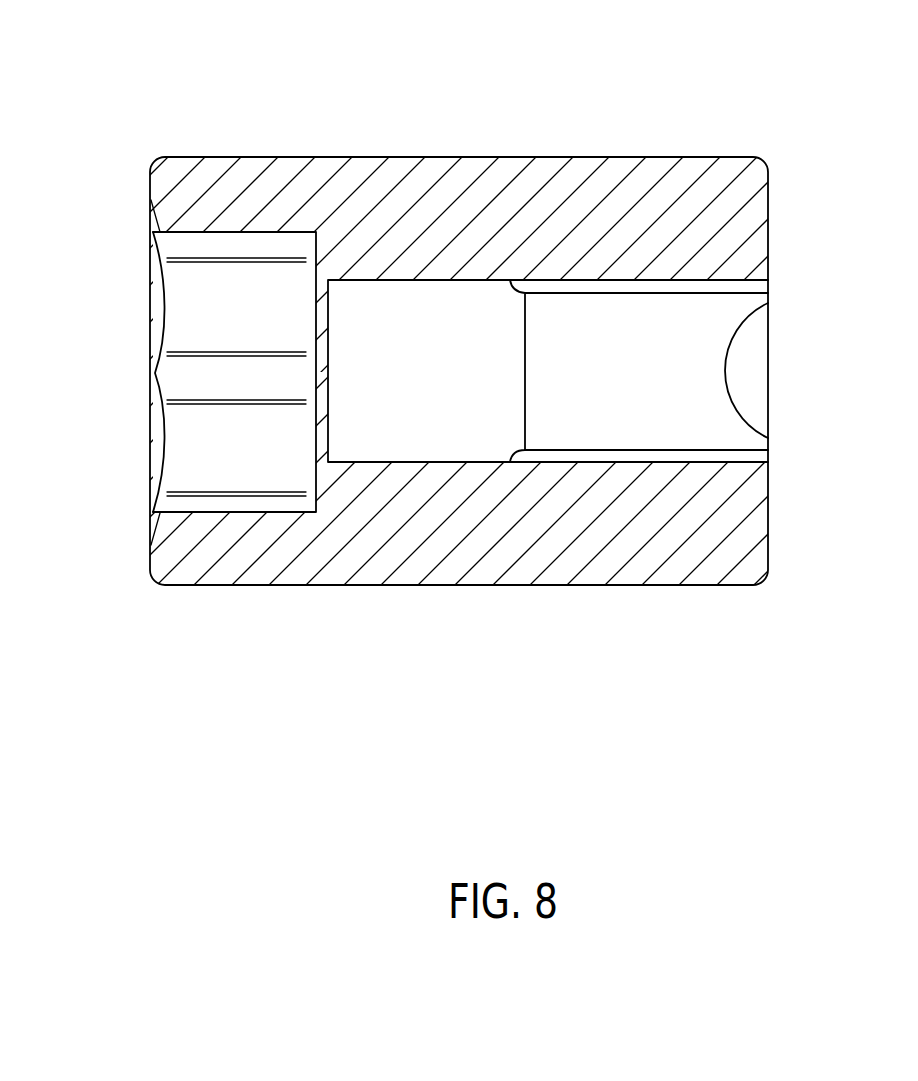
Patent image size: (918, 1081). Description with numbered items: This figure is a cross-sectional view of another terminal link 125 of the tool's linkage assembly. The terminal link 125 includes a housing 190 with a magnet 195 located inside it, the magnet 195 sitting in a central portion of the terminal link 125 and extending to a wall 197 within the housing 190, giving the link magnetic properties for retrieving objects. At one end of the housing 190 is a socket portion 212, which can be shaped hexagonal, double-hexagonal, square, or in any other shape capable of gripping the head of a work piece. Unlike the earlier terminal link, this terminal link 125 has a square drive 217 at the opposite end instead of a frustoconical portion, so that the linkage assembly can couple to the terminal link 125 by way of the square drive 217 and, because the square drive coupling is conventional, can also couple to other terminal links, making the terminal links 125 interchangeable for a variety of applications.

The terminal link 125 is at (124, 89).
The housing 190 is at (458, 487).
The magnet 195 is at (420, 293).
The wall 197 is at (322, 427).
The socket portion 212 is at (154, 374).
The square drive 217 is at (727, 373).